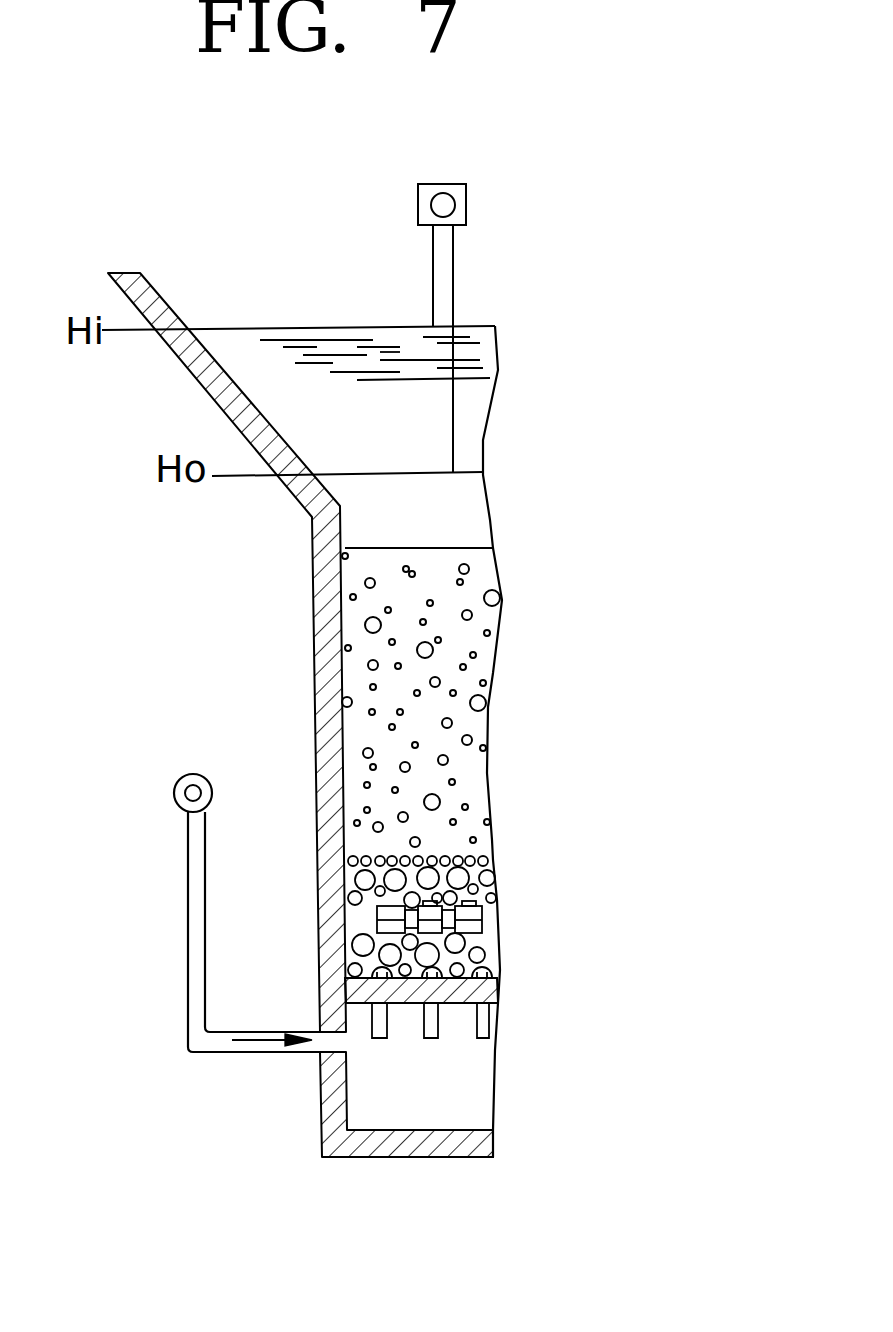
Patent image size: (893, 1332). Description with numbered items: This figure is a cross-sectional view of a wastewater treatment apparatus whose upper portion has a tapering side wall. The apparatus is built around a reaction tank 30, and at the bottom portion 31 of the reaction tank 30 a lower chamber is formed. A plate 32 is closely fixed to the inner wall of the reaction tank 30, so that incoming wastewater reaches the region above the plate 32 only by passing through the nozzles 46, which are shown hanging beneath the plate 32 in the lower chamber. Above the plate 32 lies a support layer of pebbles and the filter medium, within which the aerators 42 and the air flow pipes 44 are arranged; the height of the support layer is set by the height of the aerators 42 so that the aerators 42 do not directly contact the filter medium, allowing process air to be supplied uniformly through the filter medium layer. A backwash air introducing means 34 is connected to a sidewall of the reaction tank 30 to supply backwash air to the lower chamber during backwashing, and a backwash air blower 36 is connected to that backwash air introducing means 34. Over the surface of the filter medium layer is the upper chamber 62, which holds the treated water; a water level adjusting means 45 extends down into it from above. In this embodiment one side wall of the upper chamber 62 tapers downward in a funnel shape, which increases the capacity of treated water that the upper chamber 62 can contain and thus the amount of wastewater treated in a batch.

The reaction tank 30 is at (330, 617).
The bottom portion 31 is at (437, 1148).
The plate 32 is at (340, 997).
The backwash air introducing means 34 is at (187, 952).
The backwash air blower 36 is at (174, 786).
The aerators 42 is at (375, 903).
The air flow pipes 44 is at (358, 922).
The water level adjusting means 45 is at (418, 204).
The nozzles 46 is at (379, 1033).
The upper chamber 62 is at (490, 326).